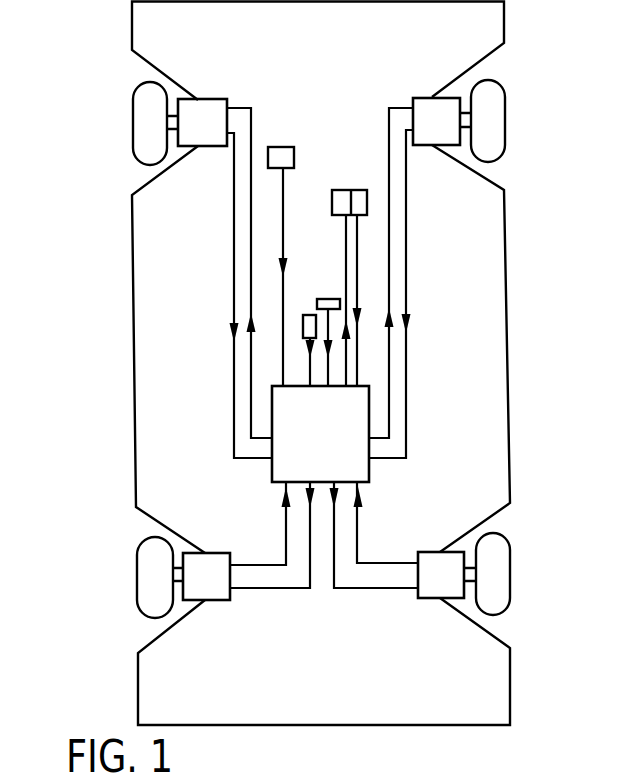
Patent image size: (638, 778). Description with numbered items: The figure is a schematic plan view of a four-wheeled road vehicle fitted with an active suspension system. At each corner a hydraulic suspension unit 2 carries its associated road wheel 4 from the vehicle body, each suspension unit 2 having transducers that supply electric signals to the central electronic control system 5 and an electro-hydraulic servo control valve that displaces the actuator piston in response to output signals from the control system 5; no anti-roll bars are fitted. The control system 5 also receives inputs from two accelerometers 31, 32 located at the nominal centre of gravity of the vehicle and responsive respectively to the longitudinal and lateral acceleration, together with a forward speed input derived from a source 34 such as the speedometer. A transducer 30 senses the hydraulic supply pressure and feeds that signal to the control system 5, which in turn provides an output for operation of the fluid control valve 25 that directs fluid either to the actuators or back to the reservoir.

The hydraulic suspension unit 2 is at (321, 349).
The road wheel 4 is at (145, 118).
The control system 5 is at (320, 434).
The fluid control valve 25 is at (337, 200).
The transducer 30 is at (358, 190).
The accelerometer 31 is at (328, 299).
The accelerometer 32 is at (303, 320).
The source 34 is at (285, 147).